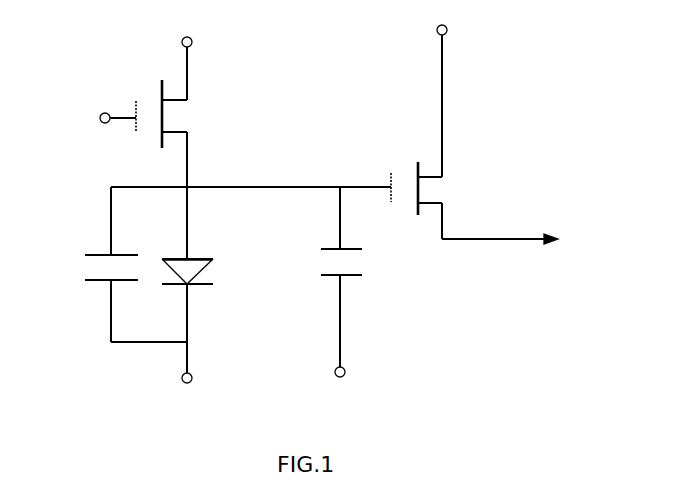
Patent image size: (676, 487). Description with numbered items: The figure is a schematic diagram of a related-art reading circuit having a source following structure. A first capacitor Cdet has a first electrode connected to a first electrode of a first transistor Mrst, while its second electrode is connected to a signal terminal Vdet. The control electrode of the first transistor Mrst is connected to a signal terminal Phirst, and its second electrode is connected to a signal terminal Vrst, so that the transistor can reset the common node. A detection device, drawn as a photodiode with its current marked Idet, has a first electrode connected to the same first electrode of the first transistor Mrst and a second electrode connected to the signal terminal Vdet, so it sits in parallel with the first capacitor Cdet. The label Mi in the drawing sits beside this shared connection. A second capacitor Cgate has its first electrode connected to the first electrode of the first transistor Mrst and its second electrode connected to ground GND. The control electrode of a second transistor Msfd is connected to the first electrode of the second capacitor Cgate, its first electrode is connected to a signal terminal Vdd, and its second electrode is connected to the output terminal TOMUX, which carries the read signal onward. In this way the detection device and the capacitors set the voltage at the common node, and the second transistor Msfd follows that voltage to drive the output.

The signal terminal Vrst is at (164, 67).
The signal terminal φrst Phirst is at (106, 103).
The first transistor Mrst is at (182, 114).
The first capacitor Cdet is at (95, 270).
The detector current (photodiode) Idet is at (238, 320).
The signal terminal Vdet is at (209, 379).
The integration node Mi is at (329, 201).
The second capacitor Cgate is at (316, 265).
The ground GND is at (356, 380).
The signal terminal Vdd is at (420, 43).
The second transistor Msfd is at (457, 188).
The output terminal TOMUX is at (500, 260).